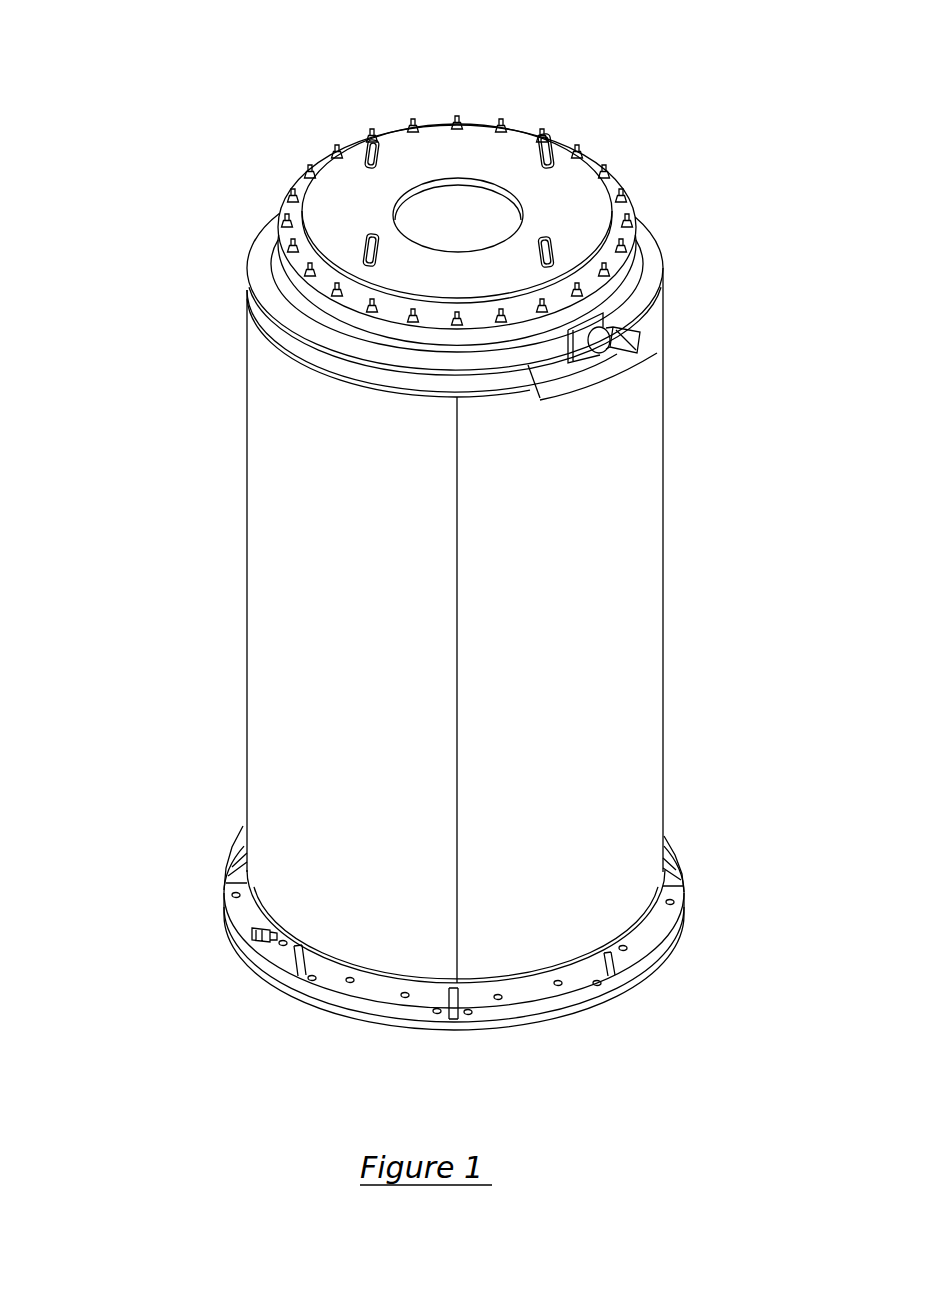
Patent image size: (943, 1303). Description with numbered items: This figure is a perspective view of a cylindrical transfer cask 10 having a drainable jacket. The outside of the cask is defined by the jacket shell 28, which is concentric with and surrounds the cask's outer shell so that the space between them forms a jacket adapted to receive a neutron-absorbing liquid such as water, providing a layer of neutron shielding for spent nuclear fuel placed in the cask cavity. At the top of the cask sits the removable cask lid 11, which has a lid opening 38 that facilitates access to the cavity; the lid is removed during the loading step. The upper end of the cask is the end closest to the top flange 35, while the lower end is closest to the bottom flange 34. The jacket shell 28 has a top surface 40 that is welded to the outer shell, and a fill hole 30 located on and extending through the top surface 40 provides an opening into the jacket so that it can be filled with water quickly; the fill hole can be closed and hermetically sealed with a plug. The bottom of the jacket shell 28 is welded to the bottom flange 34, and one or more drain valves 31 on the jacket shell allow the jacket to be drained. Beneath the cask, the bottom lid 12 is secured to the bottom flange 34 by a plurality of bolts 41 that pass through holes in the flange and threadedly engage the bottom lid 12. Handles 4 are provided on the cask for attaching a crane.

The transfer cask 10 is at (91, 112).
The cask lid 11 is at (597, 200).
The lid opening 38 is at (445, 178).
The fill hole 30 is at (294, 324).
The top flange 35 is at (375, 328).
The top surface 40 is at (258, 250).
The handles 4 is at (637, 363).
The jacket shell 28 is at (643, 568).
The bottom lid 12 is at (535, 1022).
The bolts 41 is at (407, 995).
The drain valve 31 is at (232, 917).
The bottom flange 34 is at (664, 930).